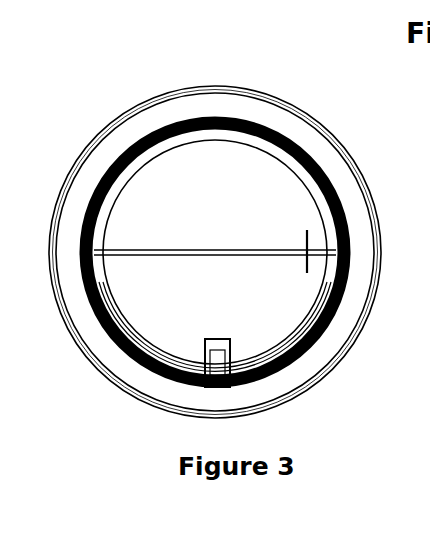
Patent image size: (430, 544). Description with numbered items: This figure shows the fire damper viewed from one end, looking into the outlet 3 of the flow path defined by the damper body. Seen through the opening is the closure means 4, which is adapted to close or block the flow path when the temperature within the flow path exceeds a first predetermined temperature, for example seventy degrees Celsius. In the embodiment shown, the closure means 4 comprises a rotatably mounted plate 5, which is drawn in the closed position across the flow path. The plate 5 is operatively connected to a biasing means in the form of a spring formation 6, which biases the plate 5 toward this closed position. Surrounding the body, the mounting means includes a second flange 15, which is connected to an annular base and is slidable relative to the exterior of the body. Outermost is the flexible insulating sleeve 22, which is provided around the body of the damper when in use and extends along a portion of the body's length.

The flexible insulating sleeve 22 is at (136, 108).
The second flange 15 is at (186, 108).
The outlet 3 is at (370, 309).
The rotatably mounted plate 5 is at (242, 182).
The closure means 4 is at (150, 308).
The spring formation 6 is at (222, 342).